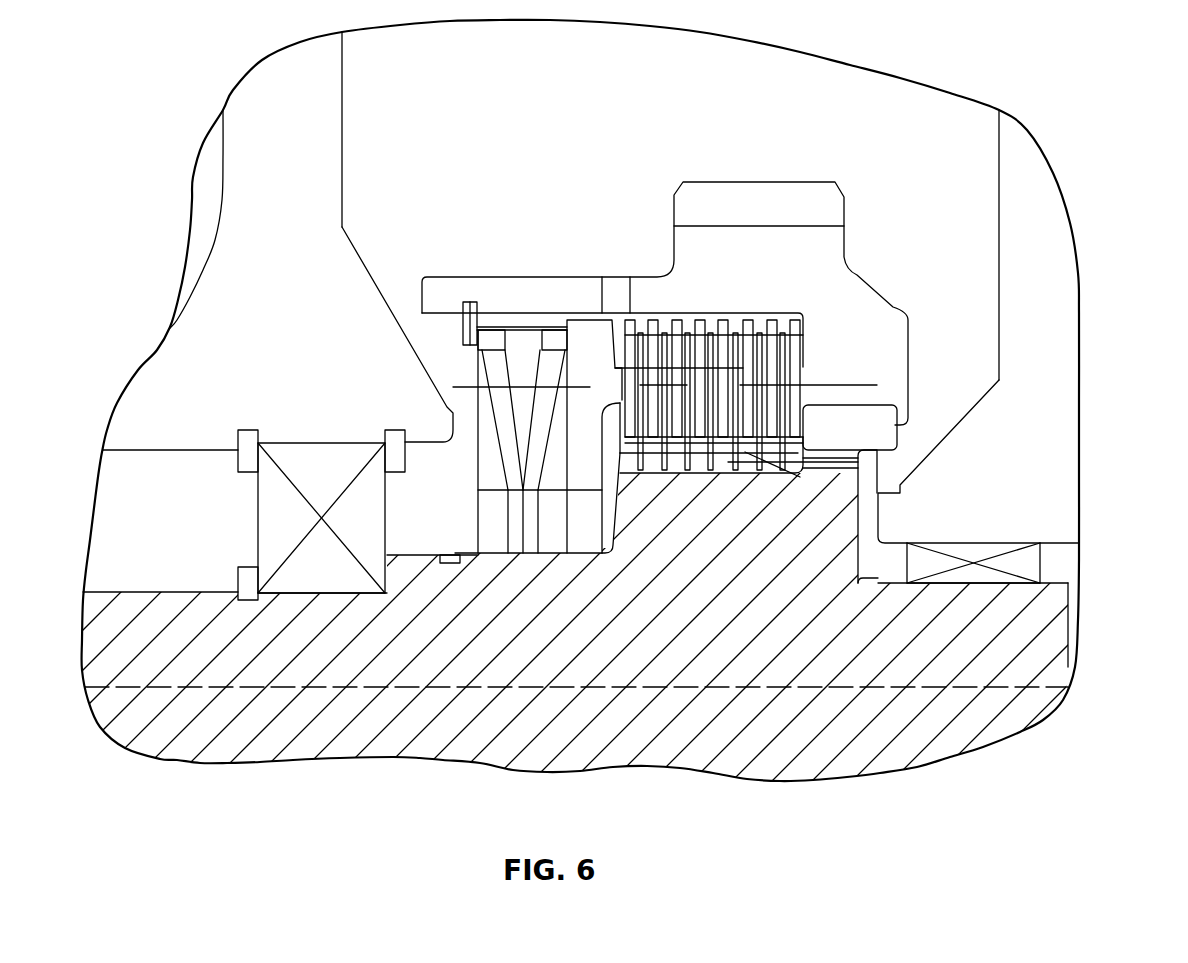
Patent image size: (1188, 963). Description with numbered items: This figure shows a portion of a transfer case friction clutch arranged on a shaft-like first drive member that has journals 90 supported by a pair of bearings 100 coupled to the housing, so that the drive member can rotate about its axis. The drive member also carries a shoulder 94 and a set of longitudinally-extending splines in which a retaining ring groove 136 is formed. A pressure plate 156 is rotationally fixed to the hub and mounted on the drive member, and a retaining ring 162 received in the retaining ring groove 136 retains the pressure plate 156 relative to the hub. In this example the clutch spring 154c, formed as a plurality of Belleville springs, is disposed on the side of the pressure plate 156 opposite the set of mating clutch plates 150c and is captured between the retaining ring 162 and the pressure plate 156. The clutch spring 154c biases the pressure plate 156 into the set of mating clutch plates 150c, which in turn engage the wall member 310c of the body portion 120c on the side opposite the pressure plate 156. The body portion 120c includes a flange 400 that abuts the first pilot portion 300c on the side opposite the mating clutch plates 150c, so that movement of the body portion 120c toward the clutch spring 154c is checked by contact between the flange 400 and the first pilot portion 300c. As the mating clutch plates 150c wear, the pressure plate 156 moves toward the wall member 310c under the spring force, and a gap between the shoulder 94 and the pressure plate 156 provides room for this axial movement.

The journals 90 is at (283, 641).
The shoulder 94 is at (617, 512).
The bearings 100 is at (307, 450).
The body portion 120c is at (963, 323).
The retaining ring groove 136 is at (470, 302).
The set of mating clutch plates 150c is at (816, 336).
The clutch spring 154c is at (464, 373).
The pressure plate 156 is at (582, 543).
The retaining ring 162 is at (460, 322).
The first pilot portion 300c is at (865, 428).
The wall member 310c is at (807, 377).
The flange 400 is at (903, 390).